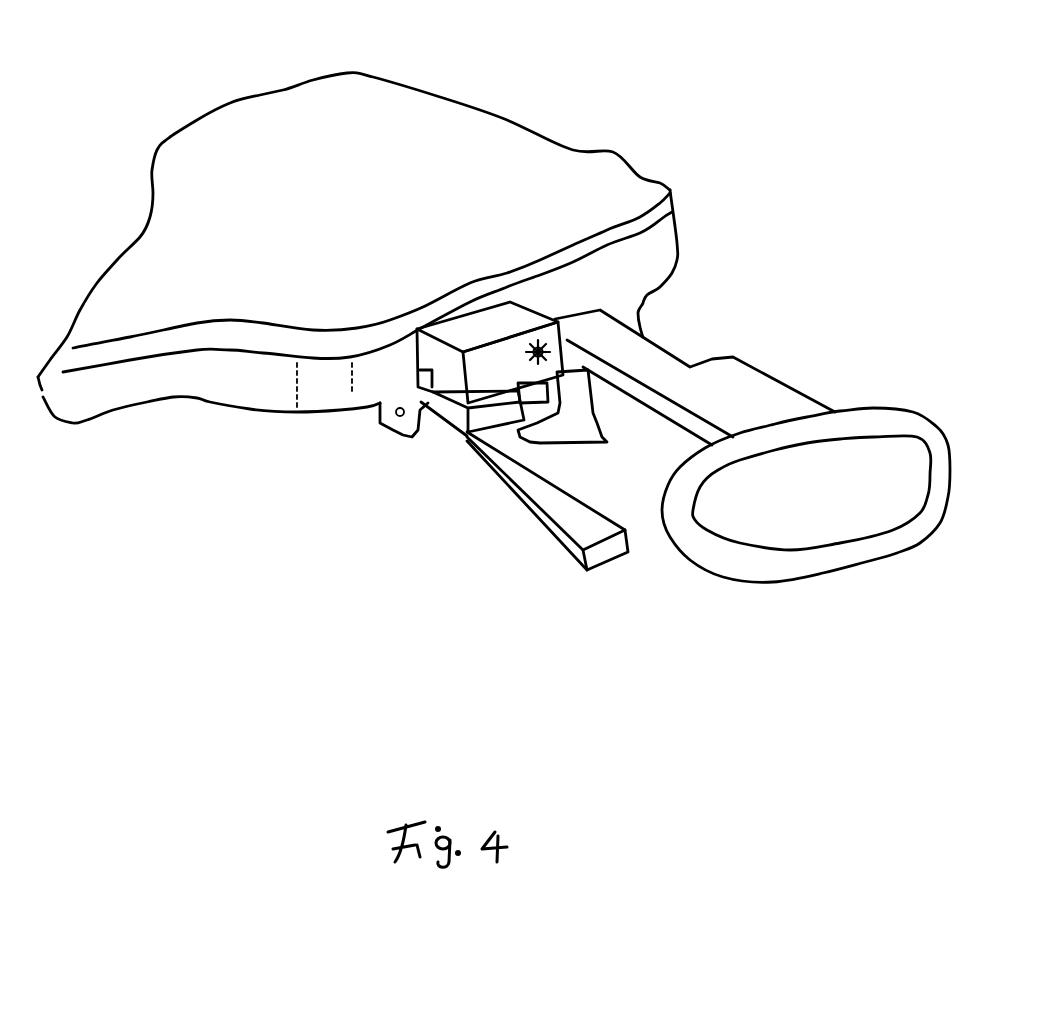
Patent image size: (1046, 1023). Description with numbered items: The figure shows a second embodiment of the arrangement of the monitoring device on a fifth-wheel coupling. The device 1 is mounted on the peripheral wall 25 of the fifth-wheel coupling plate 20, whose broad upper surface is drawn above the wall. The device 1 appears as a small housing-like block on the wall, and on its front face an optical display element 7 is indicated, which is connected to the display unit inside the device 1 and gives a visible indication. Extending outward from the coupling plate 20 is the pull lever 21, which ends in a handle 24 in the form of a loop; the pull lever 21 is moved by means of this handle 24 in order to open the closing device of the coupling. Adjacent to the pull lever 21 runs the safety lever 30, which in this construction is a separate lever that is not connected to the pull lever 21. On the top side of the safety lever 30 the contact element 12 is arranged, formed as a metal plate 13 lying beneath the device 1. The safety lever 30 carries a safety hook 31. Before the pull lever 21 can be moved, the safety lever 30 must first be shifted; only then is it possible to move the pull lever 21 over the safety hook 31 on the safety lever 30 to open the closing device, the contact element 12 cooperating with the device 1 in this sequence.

The device 1 is at (493, 323).
The optical display element 7 is at (463, 351).
The contact element 12 is at (452, 488).
The metal plate 13 is at (443, 567).
The fifth-wheel coupling plate 20 is at (573, 182).
The pull lever 21 is at (747, 393).
The handle 24 is at (783, 567).
The peripheral wall 25 is at (650, 257).
The safety lever 30 is at (573, 513).
The safety hook 31 is at (578, 408).